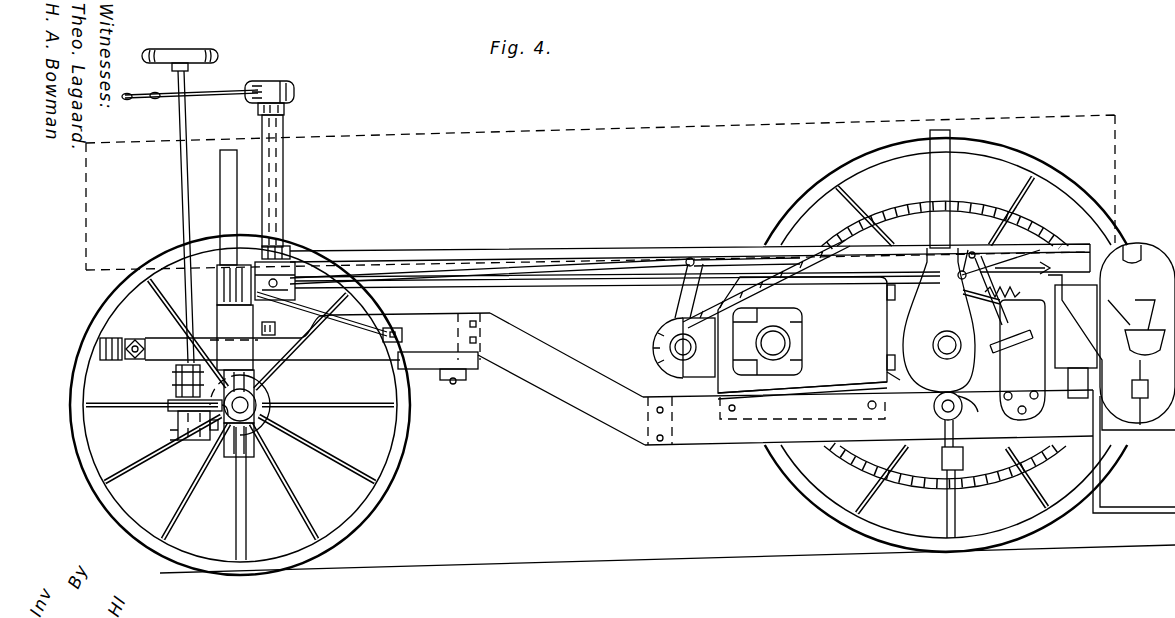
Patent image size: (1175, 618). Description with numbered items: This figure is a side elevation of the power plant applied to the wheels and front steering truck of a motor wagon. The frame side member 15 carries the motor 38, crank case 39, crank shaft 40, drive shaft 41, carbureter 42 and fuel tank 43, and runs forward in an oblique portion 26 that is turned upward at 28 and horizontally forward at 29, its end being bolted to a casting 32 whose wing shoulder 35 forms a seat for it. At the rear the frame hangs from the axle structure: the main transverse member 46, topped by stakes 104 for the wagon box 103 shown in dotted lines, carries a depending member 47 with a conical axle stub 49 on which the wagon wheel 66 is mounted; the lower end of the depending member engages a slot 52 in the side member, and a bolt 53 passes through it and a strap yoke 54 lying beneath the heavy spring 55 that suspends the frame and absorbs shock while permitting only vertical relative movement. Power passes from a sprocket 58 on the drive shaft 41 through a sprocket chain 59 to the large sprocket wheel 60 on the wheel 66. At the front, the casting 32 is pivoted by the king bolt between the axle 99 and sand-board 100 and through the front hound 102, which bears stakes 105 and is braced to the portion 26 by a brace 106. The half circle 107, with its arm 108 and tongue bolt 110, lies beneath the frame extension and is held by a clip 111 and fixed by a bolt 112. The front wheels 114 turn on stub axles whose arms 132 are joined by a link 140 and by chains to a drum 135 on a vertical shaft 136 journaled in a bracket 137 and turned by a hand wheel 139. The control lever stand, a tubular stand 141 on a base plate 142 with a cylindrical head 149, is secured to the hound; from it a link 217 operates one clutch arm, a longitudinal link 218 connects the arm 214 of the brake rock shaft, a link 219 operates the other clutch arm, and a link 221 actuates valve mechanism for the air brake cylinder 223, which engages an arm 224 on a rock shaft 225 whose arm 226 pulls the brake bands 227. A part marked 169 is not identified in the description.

The side member 15 is at (717, 434).
The oblique portion 26 is at (562, 363).
The upward turn 28 is at (647, 446).
The horizontal forward turn 29 is at (490, 318).
The casting 32 is at (270, 330).
The shoulder 35 is at (291, 349).
The motor 38 is at (992, 354).
The crank case 39 is at (818, 369).
The crank shaft 40 is at (785, 342).
The drive shaft 41 is at (675, 352).
The carbureter 42 is at (1148, 378).
The fuel tank 43 is at (1148, 262).
The main transverse member 46 is at (968, 252).
The depending member 47 is at (888, 374).
The axle stub 49 is at (945, 347).
The slot 52 is at (964, 399).
The bolt 53 is at (934, 408).
The strap yoke 54 is at (944, 425).
The spring 55 is at (927, 443).
The sprocket 58 is at (655, 340).
The sprocket chain 59 is at (853, 244).
The sprocket wheel 60 is at (790, 243).
The wheel 66 is at (828, 178).
The axle 99 is at (222, 342).
The sand-board 100 is at (222, 305).
The front hound 102 is at (232, 282).
The wagon box 103 is at (650, 120).
The stake 104 is at (950, 134).
The stake 105 is at (228, 183).
The brace 106 is at (366, 304).
The half circle 107 is at (424, 369).
The arm 108 is at (165, 340).
The bolt 110 is at (100, 349).
The clip 111 is at (462, 381).
The bolt 112 is at (457, 385).
The front wheel 114 is at (97, 497).
The arm 132 is at (182, 408).
The drum 135 is at (176, 374).
The shaft 136 is at (181, 171).
The bracket 137 is at (198, 442).
The hand wheel 139 is at (185, 48).
The link 140 is at (177, 396).
The tubular stand 141 is at (284, 128).
The base plate 142 is at (288, 268).
The cylindrical head 149 is at (293, 88).
The control lever 169 is at (220, 84).
The arm 214 is at (680, 294).
The link 217 is at (710, 258).
The link 218 is at (521, 272).
The link 219 is at (577, 290).
The link 221 is at (607, 250).
The cylinder 223 is at (1023, 317).
The arm 224 is at (1000, 272).
The rock shaft 225 is at (976, 257).
The arm 226 is at (996, 246).
The brake band 227 is at (993, 296).